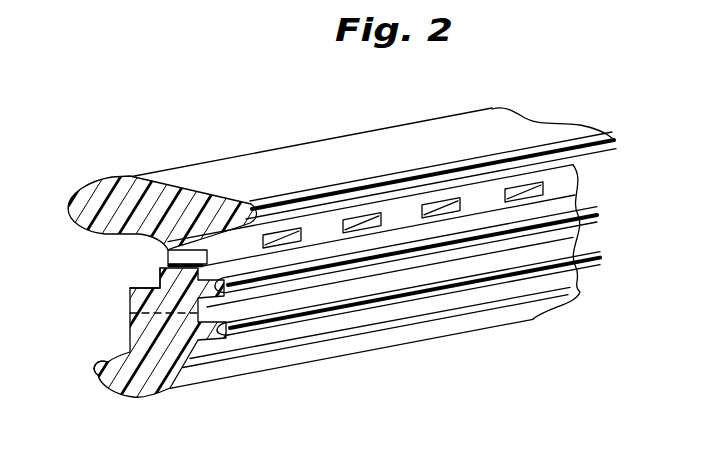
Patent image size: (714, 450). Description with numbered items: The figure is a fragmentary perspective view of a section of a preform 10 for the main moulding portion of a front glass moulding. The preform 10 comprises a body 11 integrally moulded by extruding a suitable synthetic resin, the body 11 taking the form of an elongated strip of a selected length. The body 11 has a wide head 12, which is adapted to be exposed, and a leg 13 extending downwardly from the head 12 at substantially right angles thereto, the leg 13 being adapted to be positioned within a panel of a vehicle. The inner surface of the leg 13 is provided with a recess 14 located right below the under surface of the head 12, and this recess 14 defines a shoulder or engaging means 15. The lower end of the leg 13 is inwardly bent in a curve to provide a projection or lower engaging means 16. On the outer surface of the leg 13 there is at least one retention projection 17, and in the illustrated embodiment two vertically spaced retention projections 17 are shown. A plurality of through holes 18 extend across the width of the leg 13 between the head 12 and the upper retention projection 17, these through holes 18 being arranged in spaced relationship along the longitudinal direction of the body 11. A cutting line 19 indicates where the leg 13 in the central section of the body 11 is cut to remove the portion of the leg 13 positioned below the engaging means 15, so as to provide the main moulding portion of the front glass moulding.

The preform 10 is at (407, 117).
The body 11 is at (490, 110).
The wide head 12 is at (135, 197).
The leg 13 is at (130, 313).
The recess 14 is at (142, 250).
The shoulder or engaging means 15 is at (158, 284).
The projection or lower engaging means 16 is at (99, 364).
The retention projection 17 is at (347, 301).
The through holes 18 is at (288, 236).
The cutting line 19 is at (154, 314).